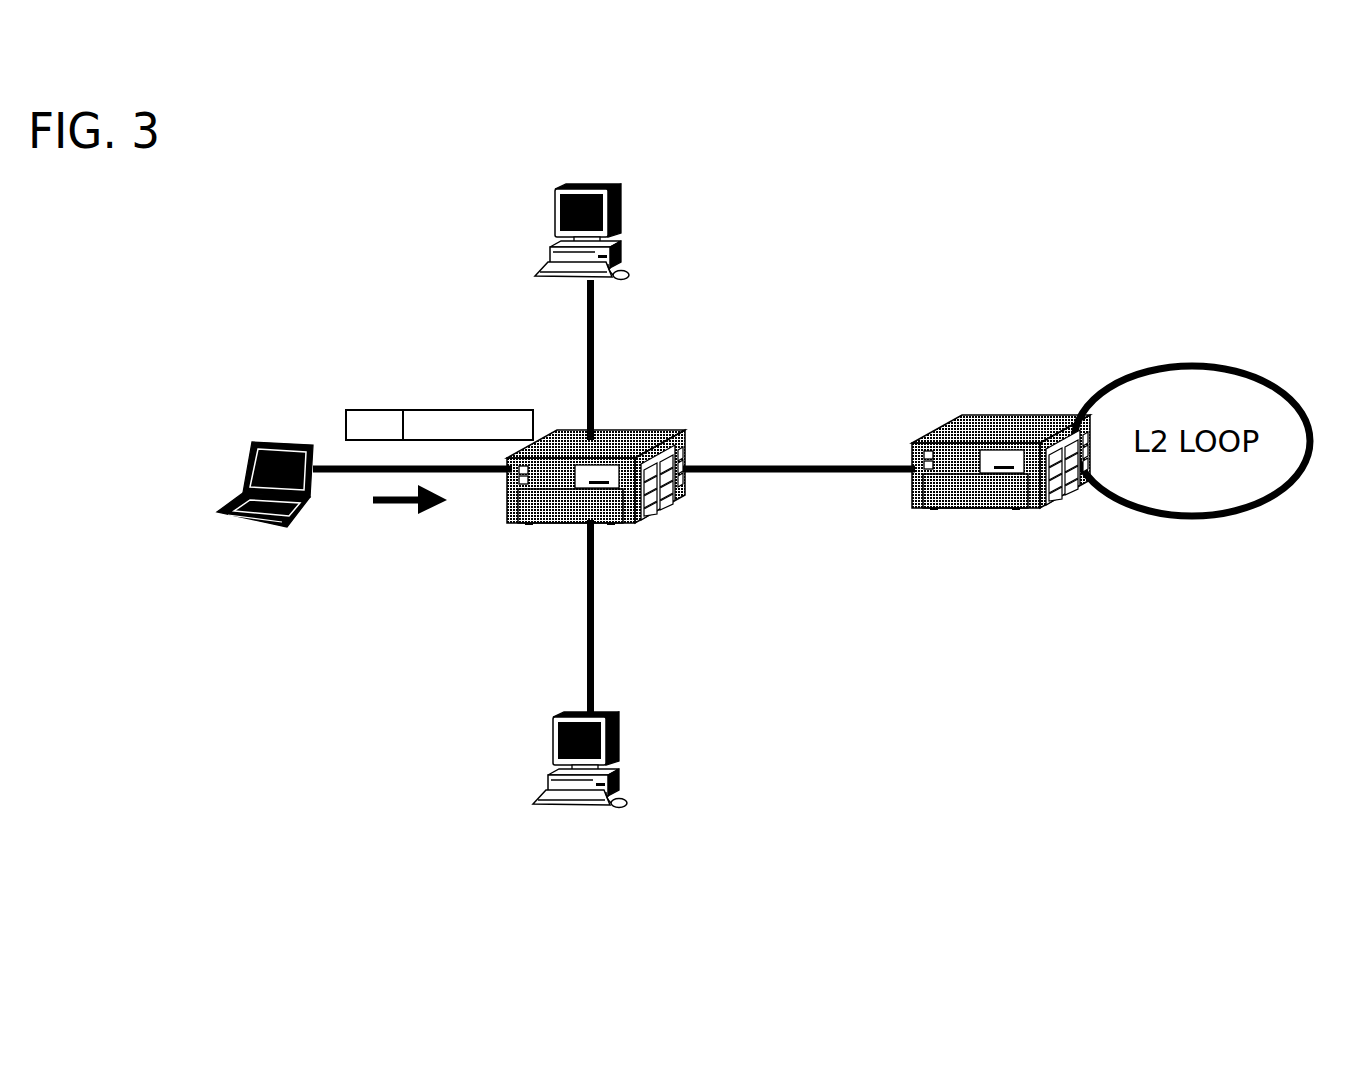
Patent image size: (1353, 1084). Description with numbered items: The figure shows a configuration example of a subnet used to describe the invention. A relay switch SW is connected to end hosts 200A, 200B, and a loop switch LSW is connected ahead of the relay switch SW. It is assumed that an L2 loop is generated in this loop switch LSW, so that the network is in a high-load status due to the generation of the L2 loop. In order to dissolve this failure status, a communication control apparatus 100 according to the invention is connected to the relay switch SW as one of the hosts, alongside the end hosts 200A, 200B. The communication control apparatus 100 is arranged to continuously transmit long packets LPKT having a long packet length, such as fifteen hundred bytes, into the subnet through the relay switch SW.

The communication control apparatus 100 is at (275, 441).
The end host 200A is at (590, 190).
The end host 200B is at (590, 807).
The relay switch SW is at (603, 452).
The loop switch LSW is at (1001, 438).
The long packet LPKT is at (439, 412).